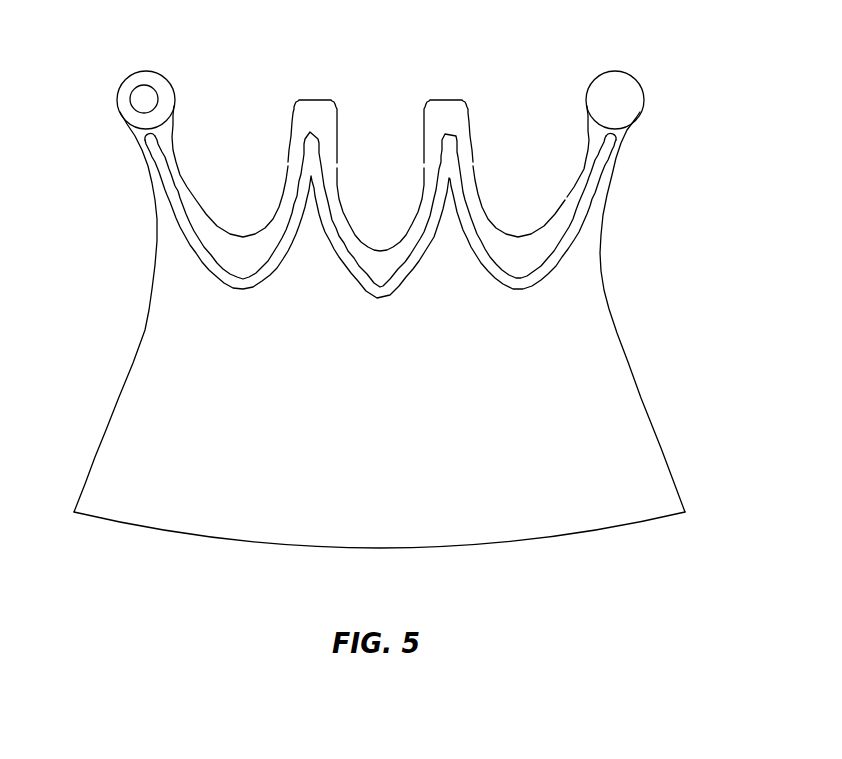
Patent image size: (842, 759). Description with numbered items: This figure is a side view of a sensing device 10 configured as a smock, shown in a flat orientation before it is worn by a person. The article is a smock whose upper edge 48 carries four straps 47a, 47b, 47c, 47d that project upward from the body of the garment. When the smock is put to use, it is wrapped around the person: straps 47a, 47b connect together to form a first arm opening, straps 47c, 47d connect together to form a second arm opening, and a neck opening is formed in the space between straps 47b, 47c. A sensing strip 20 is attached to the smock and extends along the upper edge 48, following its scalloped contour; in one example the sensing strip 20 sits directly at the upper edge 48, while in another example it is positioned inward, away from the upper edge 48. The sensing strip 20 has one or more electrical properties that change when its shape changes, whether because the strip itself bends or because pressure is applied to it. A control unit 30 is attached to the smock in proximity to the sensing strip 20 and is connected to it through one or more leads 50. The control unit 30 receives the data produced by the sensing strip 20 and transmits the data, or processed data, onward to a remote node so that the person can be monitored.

The sensing device 10 is at (708, 270).
The sensing strip 20 is at (553, 250).
The control unit 30 is at (142, 100).
The strap 47a is at (175, 101).
The strap 47b is at (315, 98).
The strap 47c is at (445, 98).
The strap 47d is at (637, 82).
The upper edge 48 is at (590, 137).
The leads 50 is at (151, 122).